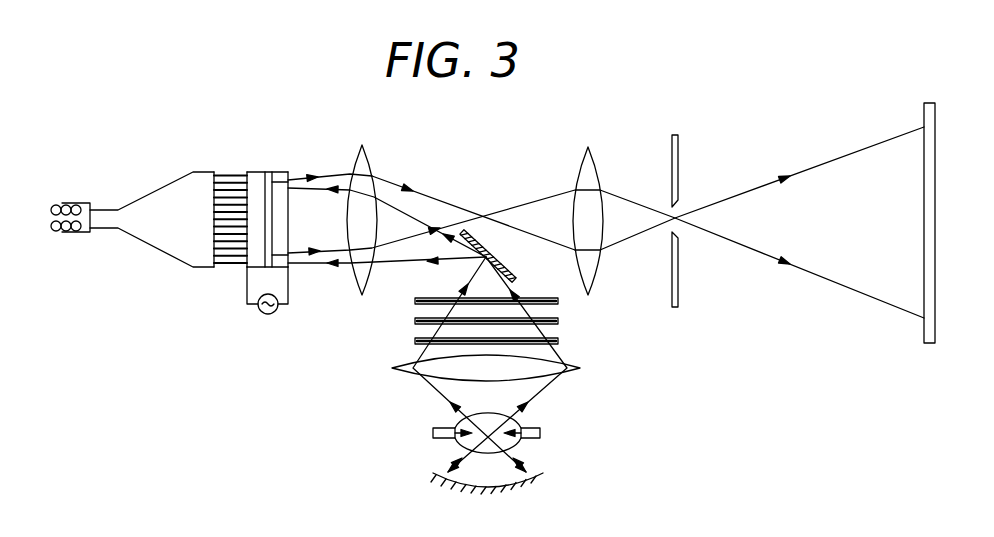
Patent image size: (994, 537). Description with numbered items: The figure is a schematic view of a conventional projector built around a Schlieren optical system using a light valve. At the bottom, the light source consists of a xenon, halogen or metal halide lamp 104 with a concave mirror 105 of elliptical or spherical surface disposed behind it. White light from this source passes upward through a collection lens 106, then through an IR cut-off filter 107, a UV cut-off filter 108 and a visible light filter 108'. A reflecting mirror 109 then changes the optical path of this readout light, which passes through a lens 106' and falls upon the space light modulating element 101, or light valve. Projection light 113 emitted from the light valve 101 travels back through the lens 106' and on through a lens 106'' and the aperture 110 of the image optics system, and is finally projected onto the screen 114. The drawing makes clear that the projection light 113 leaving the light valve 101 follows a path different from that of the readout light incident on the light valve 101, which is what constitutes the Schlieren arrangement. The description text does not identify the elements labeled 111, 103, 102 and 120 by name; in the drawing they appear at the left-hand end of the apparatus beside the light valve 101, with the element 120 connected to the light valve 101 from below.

The light source filament 111 is at (70, 203).
The condenser housing 103 is at (162, 192).
The filter 102 is at (222, 172).
The space light modulating element 101 is at (291, 155).
The AC voltage source 120 is at (274, 312).
The lens 106' is at (383, 199).
The projection light 113 is at (437, 198).
The lens 106'' is at (609, 199).
The aperture 110 is at (682, 150).
The screen 114 is at (924, 114).
The reflecting mirror 109 is at (497, 257).
The visible light filter 108' is at (525, 317).
The UV cut-off filter 108 is at (535, 340).
The IR cut-off filter 107 is at (558, 340).
The collection lens 106 is at (516, 375).
The lamp 104 is at (540, 433).
The concave mirror 105 is at (543, 471).